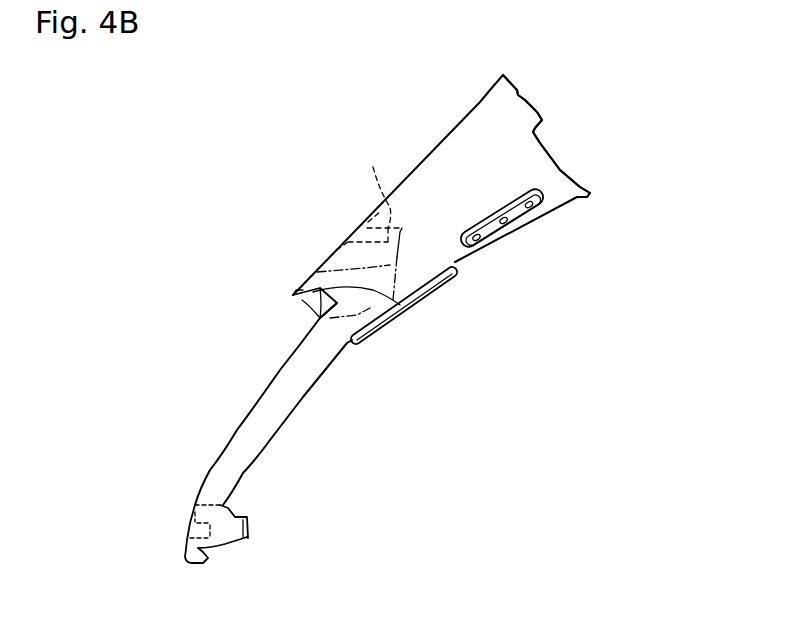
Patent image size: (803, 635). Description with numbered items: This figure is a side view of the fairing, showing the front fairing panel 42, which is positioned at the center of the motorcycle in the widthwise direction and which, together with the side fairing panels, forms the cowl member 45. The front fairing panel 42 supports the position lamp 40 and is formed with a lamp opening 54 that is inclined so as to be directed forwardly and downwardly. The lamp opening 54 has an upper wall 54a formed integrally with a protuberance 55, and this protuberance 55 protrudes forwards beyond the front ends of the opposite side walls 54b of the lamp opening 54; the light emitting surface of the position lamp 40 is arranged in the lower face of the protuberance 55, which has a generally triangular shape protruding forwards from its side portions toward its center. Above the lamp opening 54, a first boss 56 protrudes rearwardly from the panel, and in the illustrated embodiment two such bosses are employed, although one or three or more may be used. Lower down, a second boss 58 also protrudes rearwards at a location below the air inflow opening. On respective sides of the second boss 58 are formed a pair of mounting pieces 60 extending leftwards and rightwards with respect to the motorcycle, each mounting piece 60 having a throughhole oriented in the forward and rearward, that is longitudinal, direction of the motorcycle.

The front fairing panel 42 is at (558, 120).
The cowl member 45 is at (542, 160).
The position lamp 40 is at (297, 320).
The lamp opening 54 is at (300, 327).
The upper wall 54a is at (295, 293).
The side wall 54b is at (410, 301).
The protuberance 55 is at (292, 295).
The first boss 56 is at (359, 218).
The second boss 58 is at (217, 553).
The mounting piece 60 is at (248, 542).